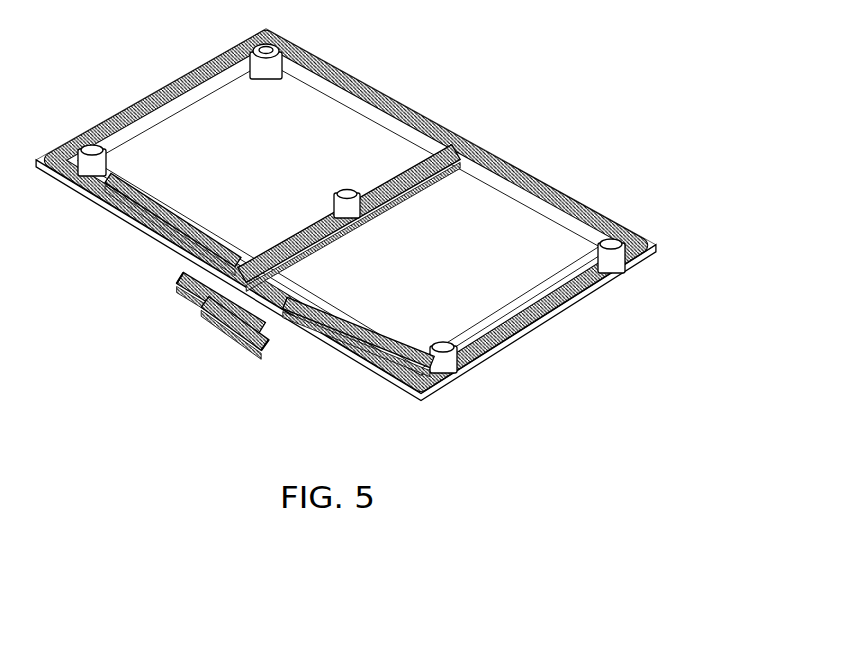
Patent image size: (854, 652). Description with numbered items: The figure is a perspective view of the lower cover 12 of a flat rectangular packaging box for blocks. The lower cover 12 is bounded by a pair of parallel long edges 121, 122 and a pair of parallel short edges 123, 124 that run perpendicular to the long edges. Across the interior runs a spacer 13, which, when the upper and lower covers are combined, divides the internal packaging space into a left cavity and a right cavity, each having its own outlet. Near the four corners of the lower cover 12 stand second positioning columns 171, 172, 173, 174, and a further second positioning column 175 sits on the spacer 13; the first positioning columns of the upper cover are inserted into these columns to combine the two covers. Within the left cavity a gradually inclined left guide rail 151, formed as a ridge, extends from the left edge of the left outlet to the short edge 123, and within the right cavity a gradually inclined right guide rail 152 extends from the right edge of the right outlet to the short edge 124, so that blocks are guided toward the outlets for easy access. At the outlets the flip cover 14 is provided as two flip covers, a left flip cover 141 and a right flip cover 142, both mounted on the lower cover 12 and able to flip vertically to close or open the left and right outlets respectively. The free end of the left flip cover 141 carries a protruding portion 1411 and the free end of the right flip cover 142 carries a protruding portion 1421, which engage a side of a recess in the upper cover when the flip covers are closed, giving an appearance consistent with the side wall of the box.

The lower cover 12 is at (346, 202).
The long edge 121 is at (98, 220).
The long edge 122 is at (363, 74).
The short edge 123 is at (153, 90).
The short edge 124 is at (550, 325).
The spacer 13 is at (473, 155).
The flip cover 14 is at (192, 332).
The left flip cover 141 is at (177, 303).
The protruding portion 1411 is at (177, 278).
The right flip cover 142 is at (233, 343).
The protruding portion 1421 is at (258, 354).
The left guide rail 151 is at (140, 194).
The right guide rail 152 is at (370, 328).
The second positioning column 171 is at (267, 79).
The second positioning column 172 is at (598, 262).
The second positioning column 173 is at (440, 346).
The second positioning column 174 is at (106, 162).
The second positioning column 175 is at (347, 194).